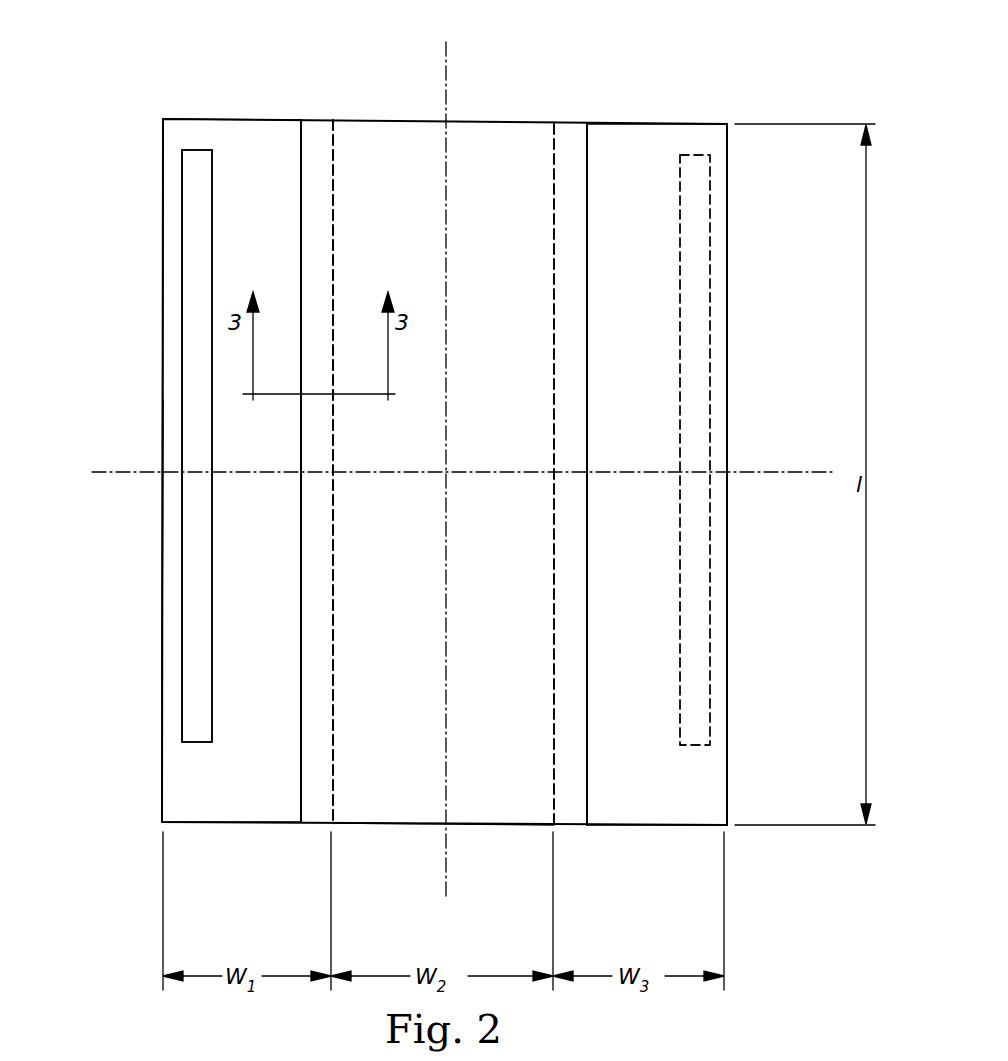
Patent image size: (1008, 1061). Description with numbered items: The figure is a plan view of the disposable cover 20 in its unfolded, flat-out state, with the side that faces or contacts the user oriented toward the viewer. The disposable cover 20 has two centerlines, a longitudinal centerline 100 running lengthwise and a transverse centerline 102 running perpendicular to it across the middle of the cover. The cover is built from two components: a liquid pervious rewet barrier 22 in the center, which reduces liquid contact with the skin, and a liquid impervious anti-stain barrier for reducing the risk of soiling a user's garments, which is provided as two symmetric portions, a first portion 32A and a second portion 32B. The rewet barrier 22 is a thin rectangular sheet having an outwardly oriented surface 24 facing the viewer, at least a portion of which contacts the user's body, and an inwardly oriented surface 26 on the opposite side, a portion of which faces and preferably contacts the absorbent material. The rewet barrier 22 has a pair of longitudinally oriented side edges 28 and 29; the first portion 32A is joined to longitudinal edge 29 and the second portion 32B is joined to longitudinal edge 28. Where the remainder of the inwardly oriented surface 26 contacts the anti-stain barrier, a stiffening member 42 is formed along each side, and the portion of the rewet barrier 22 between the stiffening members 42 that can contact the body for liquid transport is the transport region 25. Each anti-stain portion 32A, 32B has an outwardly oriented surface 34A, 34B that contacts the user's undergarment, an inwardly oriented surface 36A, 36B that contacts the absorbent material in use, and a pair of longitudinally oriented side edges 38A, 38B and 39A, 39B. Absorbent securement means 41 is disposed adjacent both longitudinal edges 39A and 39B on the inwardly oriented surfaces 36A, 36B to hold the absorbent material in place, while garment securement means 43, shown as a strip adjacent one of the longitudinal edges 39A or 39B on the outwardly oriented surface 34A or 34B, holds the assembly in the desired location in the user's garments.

The disposable cover 20 is at (740, 110).
The rewet barrier 22 is at (420, 128).
The outwardly oriented surface 24 is at (410, 624).
The transport region 25 is at (443, 471).
The inwardly oriented surface 26 is at (489, 850).
The longitudinally oriented side edge 28 is at (587, 752).
The longitudinally oriented side edge 29 is at (300, 822).
The first portion of anti-stain barrier 32A is at (267, 157).
The second portion of anti-stain barrier 32B is at (657, 178).
The outwardly oriented surface 34A is at (279, 256).
The outwardly oriented surface 34B is at (652, 267).
The inwardly oriented surface 36A is at (145, 291).
The inwardly oriented surface 36B is at (741, 868).
The longitudinally oriented side edge 38A is at (325, 128).
The longitudinally oriented side edge 38B is at (555, 225).
The longitudinally oriented side edge 39A is at (163, 530).
The longitudinally oriented side edge 39B is at (727, 415).
The absorbent securement means 41 is at (198, 625).
The stiffening member 42 is at (578, 165).
The garment securement means 43 is at (190, 715).
The longitudinal centerline 100 is at (441, 489).
The transverse centerline 102 is at (443, 470).